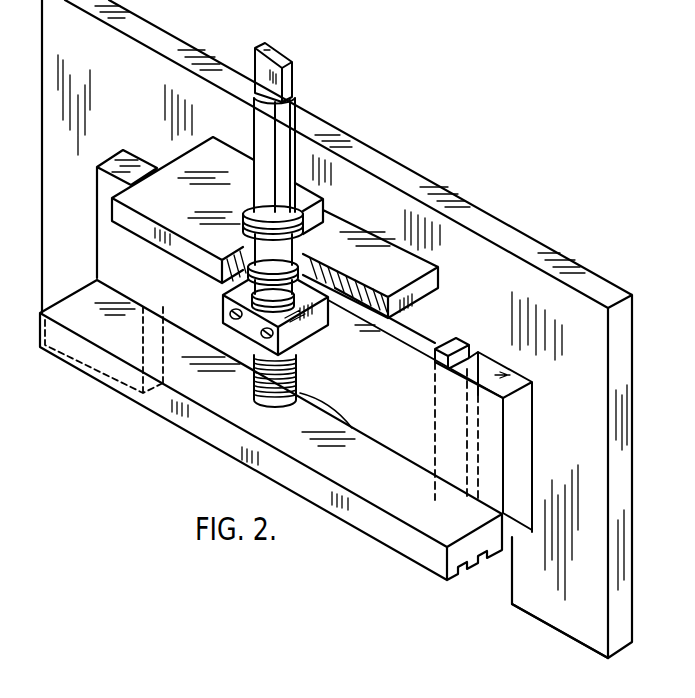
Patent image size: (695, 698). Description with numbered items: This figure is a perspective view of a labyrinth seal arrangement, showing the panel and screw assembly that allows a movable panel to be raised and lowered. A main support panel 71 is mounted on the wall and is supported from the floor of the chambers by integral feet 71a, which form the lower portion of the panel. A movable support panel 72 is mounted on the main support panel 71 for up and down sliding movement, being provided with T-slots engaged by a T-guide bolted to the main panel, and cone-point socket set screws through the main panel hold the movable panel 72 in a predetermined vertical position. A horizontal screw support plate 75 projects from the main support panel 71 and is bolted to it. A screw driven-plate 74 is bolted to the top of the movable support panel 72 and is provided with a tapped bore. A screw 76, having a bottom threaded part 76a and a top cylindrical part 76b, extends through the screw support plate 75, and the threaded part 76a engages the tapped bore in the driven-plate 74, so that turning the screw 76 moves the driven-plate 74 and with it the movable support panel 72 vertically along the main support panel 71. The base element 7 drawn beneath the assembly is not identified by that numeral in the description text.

The base bar 7 is at (273, 462).
The main support panel 71 is at (636, 390).
The integral feet 71a is at (90, 368).
The movable support panel 72 is at (518, 445).
The screw driven-plate 74 is at (312, 326).
The horizontal screw support plate 75 is at (146, 233).
The screw 76 is at (296, 127).
The bottom threaded part 76a is at (253, 396).
The top cylindrical part 76b is at (303, 236).